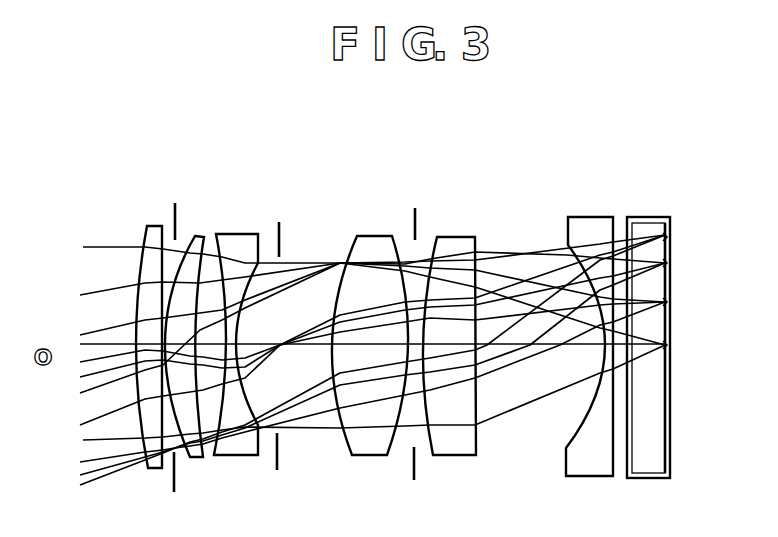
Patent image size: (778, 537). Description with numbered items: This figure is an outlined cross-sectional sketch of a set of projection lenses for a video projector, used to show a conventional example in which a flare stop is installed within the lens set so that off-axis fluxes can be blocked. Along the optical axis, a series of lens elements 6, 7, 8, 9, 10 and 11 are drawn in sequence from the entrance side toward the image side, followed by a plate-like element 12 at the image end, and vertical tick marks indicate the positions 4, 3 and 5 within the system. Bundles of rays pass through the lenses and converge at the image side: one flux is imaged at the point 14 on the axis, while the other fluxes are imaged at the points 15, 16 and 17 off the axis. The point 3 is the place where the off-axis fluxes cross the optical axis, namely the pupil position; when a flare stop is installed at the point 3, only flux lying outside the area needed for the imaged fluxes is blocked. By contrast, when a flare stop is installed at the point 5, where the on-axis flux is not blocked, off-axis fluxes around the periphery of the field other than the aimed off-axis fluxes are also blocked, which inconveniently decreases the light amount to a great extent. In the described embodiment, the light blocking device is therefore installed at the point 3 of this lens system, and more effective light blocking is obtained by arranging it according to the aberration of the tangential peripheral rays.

The point 3 is at (279, 219).
The aperture stop 4 is at (175, 200).
The point 5 is at (416, 208).
The first lens 6 is at (153, 224).
The second lens 7 is at (200, 232).
The third lens 8 is at (238, 232).
The fourth lens 9 is at (374, 234).
The fifth lens 10 is at (460, 236).
The sixth lens 11 is at (590, 217).
The image plane plate / sensor 12 is at (649, 217).
The point on the axis 14 is at (672, 362).
The point off the axis 15 is at (672, 317).
The point off the axis 16 is at (672, 272).
The point off the axis 17 is at (672, 240).